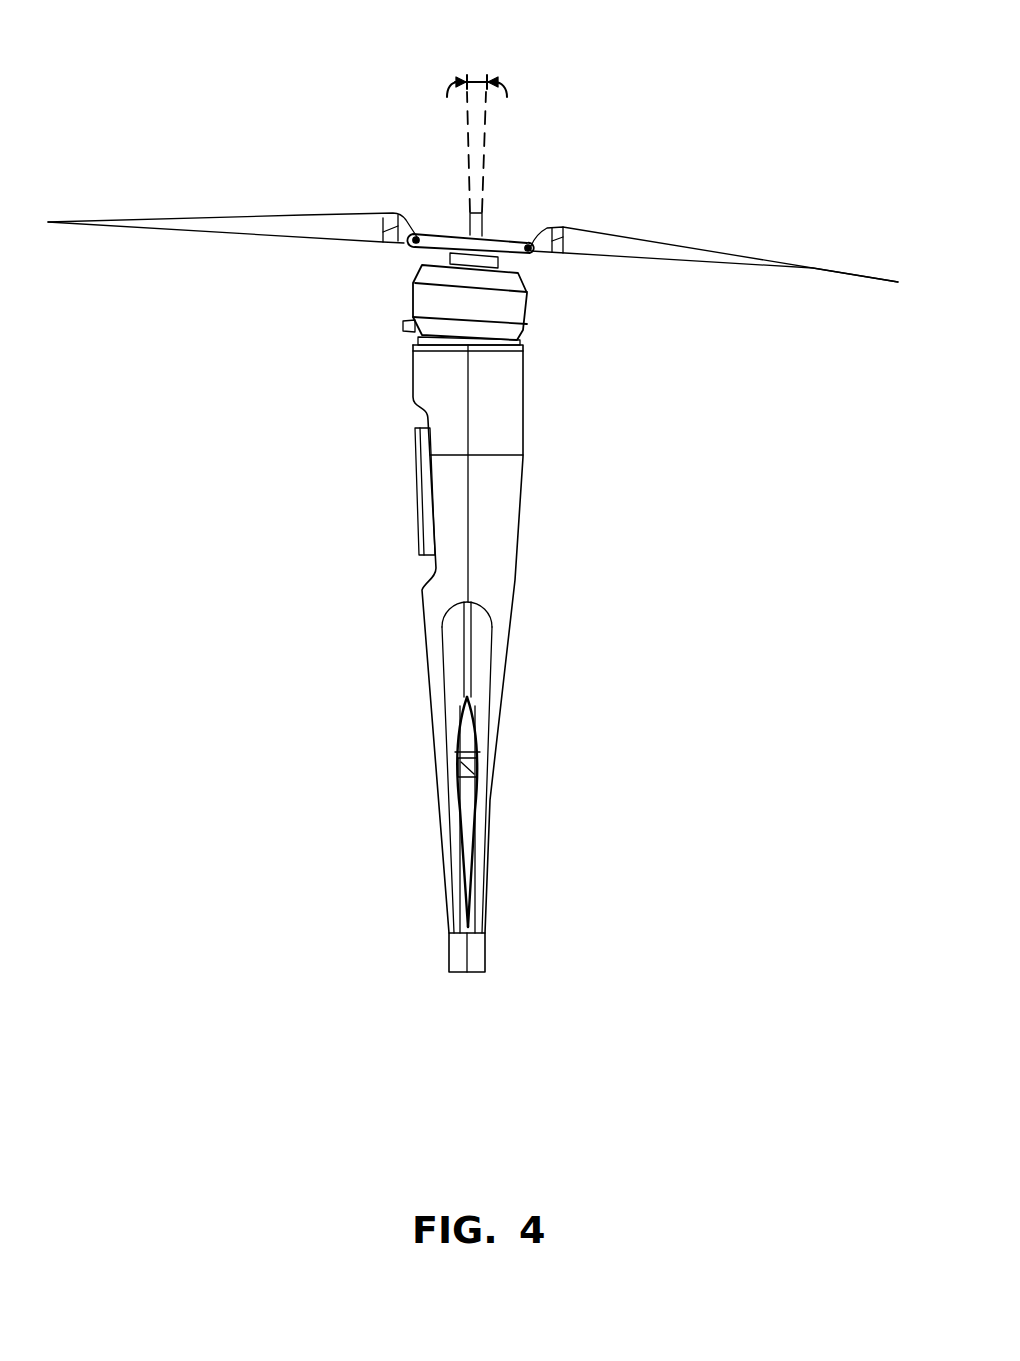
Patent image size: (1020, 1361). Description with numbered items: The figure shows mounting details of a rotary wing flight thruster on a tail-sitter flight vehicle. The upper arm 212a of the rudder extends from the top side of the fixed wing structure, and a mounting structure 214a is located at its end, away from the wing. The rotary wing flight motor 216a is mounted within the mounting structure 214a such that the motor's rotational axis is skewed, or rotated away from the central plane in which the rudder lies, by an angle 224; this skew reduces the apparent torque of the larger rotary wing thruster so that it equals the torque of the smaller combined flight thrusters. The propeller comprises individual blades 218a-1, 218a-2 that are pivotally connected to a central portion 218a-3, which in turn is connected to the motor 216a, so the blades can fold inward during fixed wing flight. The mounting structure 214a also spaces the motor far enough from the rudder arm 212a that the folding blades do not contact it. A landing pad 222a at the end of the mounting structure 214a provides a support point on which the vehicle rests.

The angle 224 is at (473, 77).
The blade 218a-1 is at (314, 218).
The blade 218a-2 is at (622, 240).
The central portion 218a-3 is at (488, 243).
The rotary wing flight motor 216a is at (520, 305).
The mounting structure 214a is at (505, 472).
The upper arm 212a is at (475, 761).
The landing pad 222a is at (486, 952).